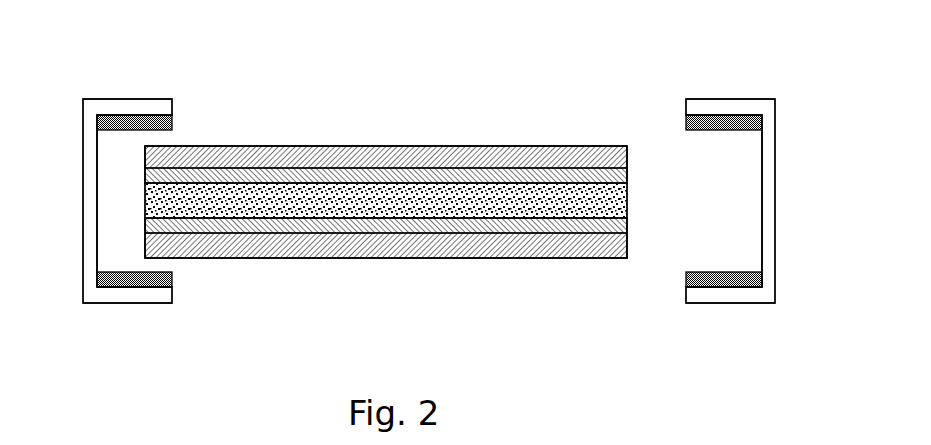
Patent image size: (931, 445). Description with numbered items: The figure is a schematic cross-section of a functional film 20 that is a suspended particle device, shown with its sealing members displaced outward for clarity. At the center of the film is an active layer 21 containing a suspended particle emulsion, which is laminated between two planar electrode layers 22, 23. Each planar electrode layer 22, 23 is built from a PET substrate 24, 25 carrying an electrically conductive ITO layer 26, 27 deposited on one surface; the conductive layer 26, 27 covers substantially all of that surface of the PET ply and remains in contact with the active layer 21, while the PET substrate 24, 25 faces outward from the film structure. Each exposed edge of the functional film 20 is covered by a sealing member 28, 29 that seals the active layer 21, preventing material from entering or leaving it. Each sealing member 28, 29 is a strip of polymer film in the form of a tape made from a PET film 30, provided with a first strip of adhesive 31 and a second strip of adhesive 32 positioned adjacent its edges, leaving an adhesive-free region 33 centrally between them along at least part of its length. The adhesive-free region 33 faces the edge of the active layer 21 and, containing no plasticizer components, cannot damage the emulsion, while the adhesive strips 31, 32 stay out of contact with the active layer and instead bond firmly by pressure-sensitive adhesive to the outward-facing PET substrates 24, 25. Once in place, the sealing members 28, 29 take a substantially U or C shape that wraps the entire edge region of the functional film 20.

The functional film 20 is at (405, 122).
The active layer 21 is at (618, 197).
The planar electrode layer 22 is at (140, 145).
The planar electrode layer 23 is at (140, 218).
The PET substrate 24 is at (258, 152).
The PET substrate 25 is at (357, 258).
The electrically conductive ITO layer 26 is at (627, 178).
The electrically conductive ITO layer 27 is at (627, 223).
The sealing member 28 is at (774, 80).
The sealing member 29 is at (108, 82).
The PET film 30 is at (93, 297).
The first strip of adhesive 31 is at (173, 128).
The second strip of adhesive 32 is at (172, 270).
The adhesive-free region 33 is at (108, 186).